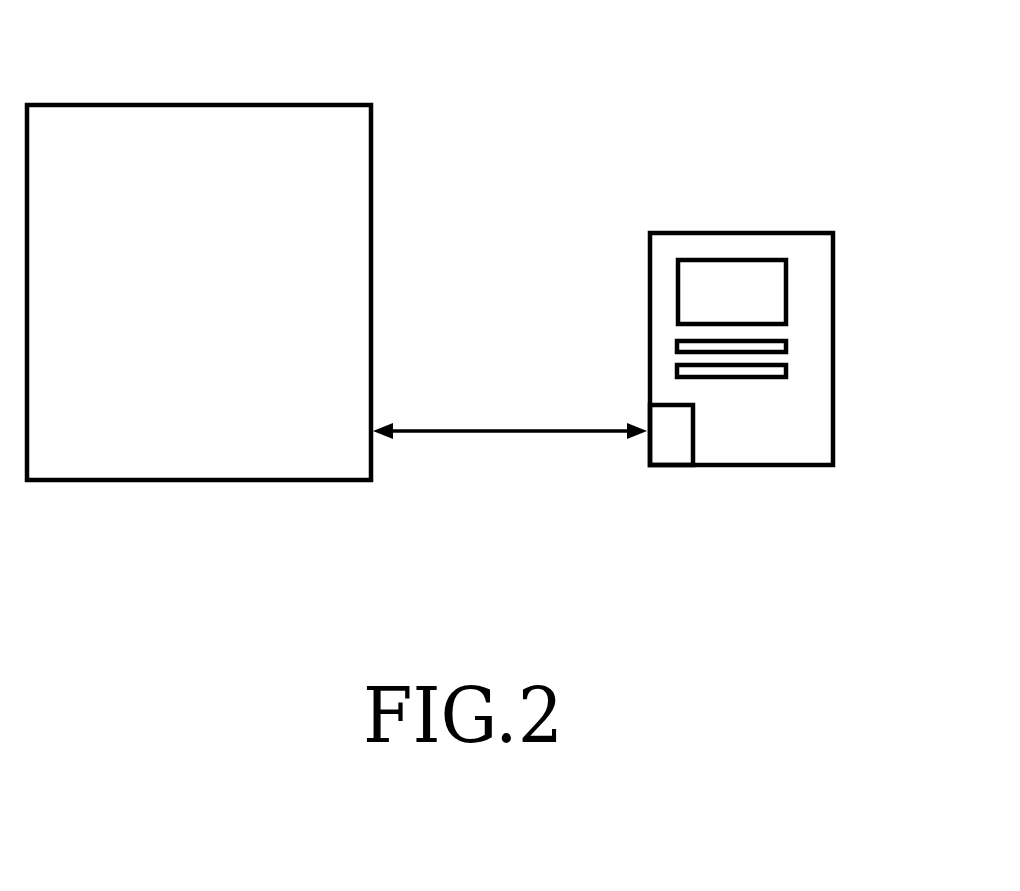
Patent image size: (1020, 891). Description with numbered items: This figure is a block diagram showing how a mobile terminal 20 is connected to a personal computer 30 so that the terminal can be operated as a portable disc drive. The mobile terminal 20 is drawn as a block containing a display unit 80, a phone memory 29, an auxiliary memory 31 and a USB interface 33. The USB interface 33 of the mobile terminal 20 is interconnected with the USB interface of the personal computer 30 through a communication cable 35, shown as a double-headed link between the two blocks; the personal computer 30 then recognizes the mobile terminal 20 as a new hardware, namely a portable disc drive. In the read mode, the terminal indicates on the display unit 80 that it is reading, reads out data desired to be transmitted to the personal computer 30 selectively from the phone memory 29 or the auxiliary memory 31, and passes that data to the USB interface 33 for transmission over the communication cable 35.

The personal computer 30 is at (200, 103).
The mobile terminal 20 is at (741, 231).
The display unit 80 is at (788, 287).
The phone memory 29 is at (787, 342).
The auxiliary memory 31 is at (787, 370).
The USB interface 33 is at (693, 433).
The communication cable 35 is at (510, 429).